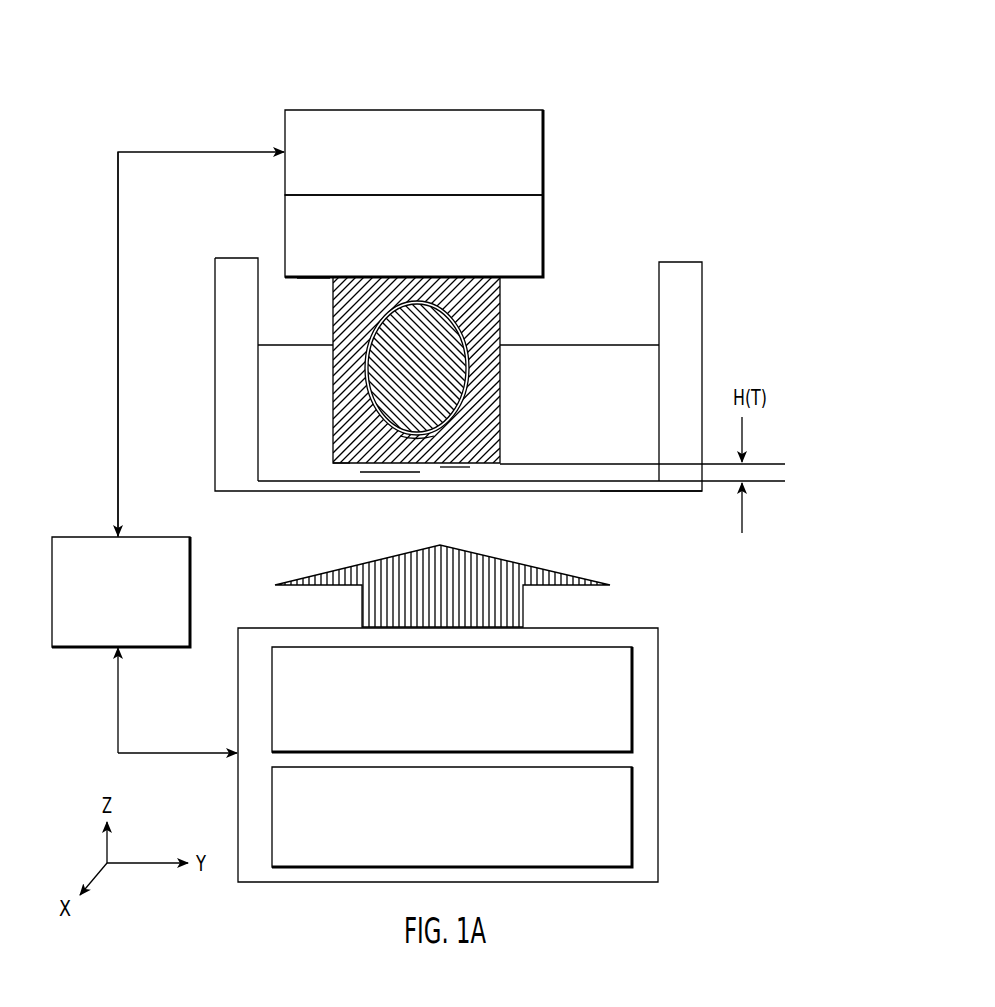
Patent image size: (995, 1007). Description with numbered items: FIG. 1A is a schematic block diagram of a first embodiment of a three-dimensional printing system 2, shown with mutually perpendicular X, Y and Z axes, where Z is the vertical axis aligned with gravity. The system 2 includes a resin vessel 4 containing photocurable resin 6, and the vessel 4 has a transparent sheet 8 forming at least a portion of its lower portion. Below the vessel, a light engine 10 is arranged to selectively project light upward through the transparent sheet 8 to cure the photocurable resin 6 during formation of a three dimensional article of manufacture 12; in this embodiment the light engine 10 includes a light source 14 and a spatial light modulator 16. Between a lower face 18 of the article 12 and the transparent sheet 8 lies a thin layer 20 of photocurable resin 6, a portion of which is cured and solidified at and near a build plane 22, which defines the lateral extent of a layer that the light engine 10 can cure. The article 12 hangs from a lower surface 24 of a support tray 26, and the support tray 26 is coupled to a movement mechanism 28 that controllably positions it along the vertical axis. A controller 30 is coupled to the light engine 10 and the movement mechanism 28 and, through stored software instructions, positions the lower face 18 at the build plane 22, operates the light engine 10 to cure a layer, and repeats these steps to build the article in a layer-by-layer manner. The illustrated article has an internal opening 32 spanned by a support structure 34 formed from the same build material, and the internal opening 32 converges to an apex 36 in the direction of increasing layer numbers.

The three-dimensional printing system 2 is at (590, 70).
The resin vessel 4 is at (725, 270).
The photocurable resin 6 is at (589, 373).
The transparent sheet 8 is at (633, 493).
The light engine 10 is at (659, 678).
The three dimensional article of manufacture 12 is at (482, 378).
The light source 14 is at (634, 816).
The spatial light modulator 16 is at (634, 724).
The lower face 18 is at (348, 465).
The thin layer 20 is at (390, 472).
The build plane 22 is at (447, 468).
The lower surface 24 is at (304, 279).
The support tray 26 is at (545, 228).
The movement mechanism 28 is at (545, 150).
The controller 30 is at (80, 537).
The internal opening 32 is at (362, 375).
The support structure 34 is at (404, 388).
The apex 36 is at (413, 437).